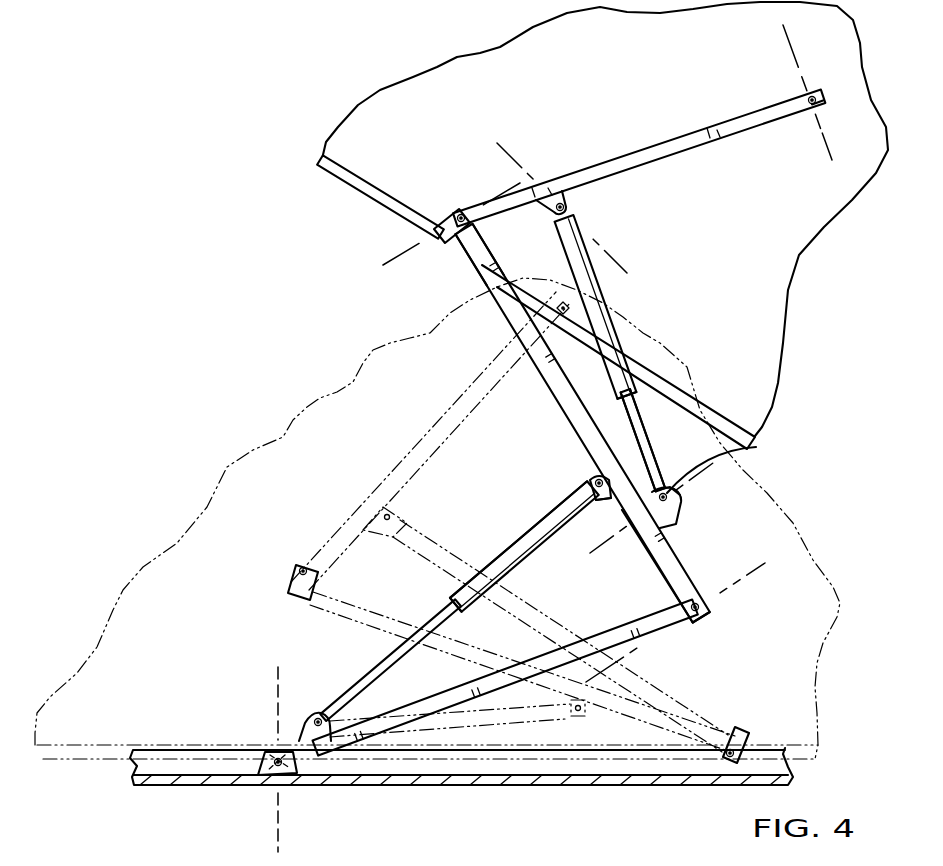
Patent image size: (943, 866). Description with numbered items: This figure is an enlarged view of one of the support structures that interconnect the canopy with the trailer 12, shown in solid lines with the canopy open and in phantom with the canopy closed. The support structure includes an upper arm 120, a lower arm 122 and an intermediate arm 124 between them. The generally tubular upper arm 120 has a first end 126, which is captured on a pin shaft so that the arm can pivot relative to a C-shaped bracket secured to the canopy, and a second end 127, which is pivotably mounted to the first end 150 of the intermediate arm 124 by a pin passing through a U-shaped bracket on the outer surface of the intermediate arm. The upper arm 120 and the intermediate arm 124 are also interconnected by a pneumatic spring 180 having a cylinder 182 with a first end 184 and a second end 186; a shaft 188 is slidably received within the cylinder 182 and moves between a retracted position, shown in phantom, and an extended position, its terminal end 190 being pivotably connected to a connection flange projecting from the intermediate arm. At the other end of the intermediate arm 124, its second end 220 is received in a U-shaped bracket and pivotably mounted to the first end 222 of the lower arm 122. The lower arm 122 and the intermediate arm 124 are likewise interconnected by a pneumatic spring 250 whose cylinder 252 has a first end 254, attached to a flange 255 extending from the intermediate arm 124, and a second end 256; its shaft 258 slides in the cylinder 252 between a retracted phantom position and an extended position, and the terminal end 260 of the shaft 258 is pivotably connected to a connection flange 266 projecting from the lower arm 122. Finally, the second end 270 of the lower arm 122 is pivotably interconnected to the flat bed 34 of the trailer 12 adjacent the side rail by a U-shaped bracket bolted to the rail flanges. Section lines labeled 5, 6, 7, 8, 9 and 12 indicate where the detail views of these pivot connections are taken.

The bed 34 is at (179, 776).
The upper arm 120 is at (680, 143).
The lower arm 122 is at (623, 640).
The intermediate arm 124 is at (563, 400).
The first end of upper arm 126 is at (766, 102).
The second end of upper arm 127 is at (469, 206).
The first end of intermediate arm 150 is at (445, 252).
The pneumatic spring 180 is at (628, 333).
The cylinder 182 is at (580, 240).
The first end of cylinder 184 is at (579, 210).
The second end of cylinder 186 is at (638, 383).
The shaft 188 is at (650, 442).
The terminal end of shaft 190 is at (757, 450).
The second end of intermediate arm 220 is at (713, 570).
The first end of lower arm 222 is at (688, 627).
The pneumatic spring 250 is at (488, 549).
The cylinder 252 is at (517, 537).
The first end of cylinder 254 is at (583, 480).
The flange 255 is at (607, 493).
The second end of cylinder 256 is at (447, 590).
The shaft 258 is at (387, 662).
The terminal end of shaft 260 is at (316, 712).
The connection flange 266 is at (307, 728).
The second end of lower arm 270 is at (305, 760).
The section line 5- 5 is at (766, 569).
The section line 6- 6 is at (714, 467).
The section line 7- 7 is at (509, 144).
The section line 8- 8 is at (823, 17).
The section line 9- 9 is at (272, 673).
The trailer 12 is at (510, 182).